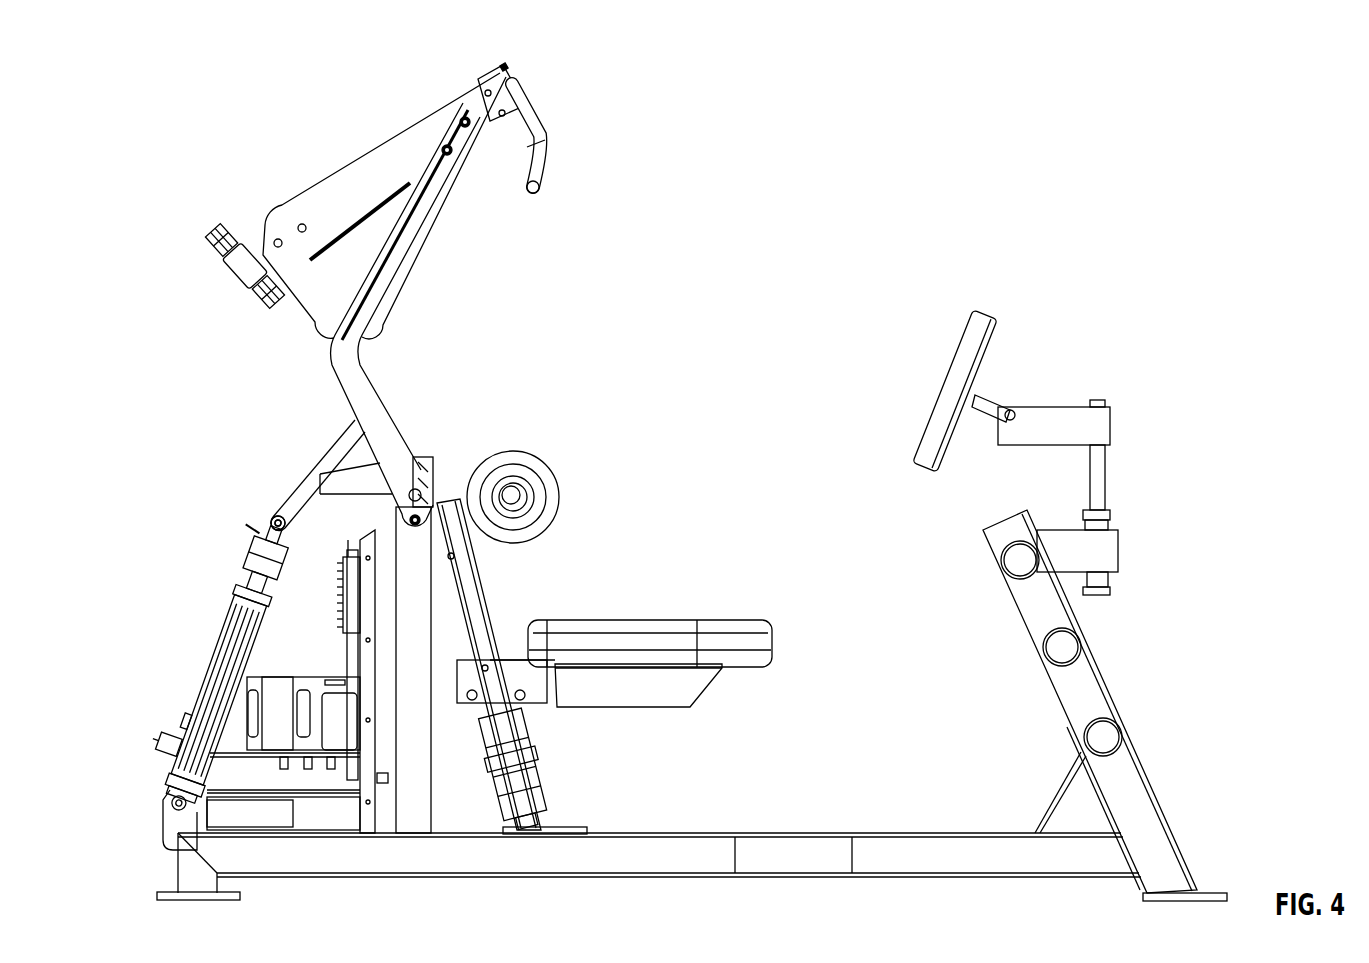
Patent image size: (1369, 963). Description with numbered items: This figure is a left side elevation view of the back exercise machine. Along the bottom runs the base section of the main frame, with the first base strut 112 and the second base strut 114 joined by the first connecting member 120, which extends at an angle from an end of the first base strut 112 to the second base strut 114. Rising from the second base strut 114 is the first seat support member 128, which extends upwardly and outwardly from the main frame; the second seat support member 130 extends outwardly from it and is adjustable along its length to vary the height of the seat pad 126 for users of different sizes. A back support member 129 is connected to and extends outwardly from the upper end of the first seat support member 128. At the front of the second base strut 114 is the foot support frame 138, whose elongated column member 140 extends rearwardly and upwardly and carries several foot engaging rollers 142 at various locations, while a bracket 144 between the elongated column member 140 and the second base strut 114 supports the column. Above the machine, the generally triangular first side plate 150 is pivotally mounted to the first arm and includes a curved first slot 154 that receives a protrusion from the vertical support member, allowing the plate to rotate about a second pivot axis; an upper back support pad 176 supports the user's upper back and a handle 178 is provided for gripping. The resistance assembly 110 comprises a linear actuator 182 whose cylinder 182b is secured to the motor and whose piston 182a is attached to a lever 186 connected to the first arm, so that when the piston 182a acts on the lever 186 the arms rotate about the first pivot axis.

The resistance assembly 110 is at (222, 609).
The first base strut 112 is at (510, 860).
The second base strut 114 is at (975, 860).
The first connecting member 120 is at (795, 860).
The seat pad 126 is at (766, 647).
The first seat support member 128 is at (472, 622).
The back support member 129 is at (482, 538).
The second seat support member 130 is at (641, 695).
The foot support frame 138 is at (1045, 692).
The elongated column member 140 is at (1143, 816).
The foot engaging rollers 142 is at (1020, 562).
The bracket 144 is at (1060, 800).
The first side plate 150 is at (340, 183).
The first slot 154 is at (431, 136).
The upper back support pad 176 is at (237, 238).
The handle 178 is at (541, 172).
The linear actuator 182 is at (187, 665).
The piston 182a is at (252, 582).
The cylinder 182b is at (226, 660).
The lever 186 is at (318, 470).